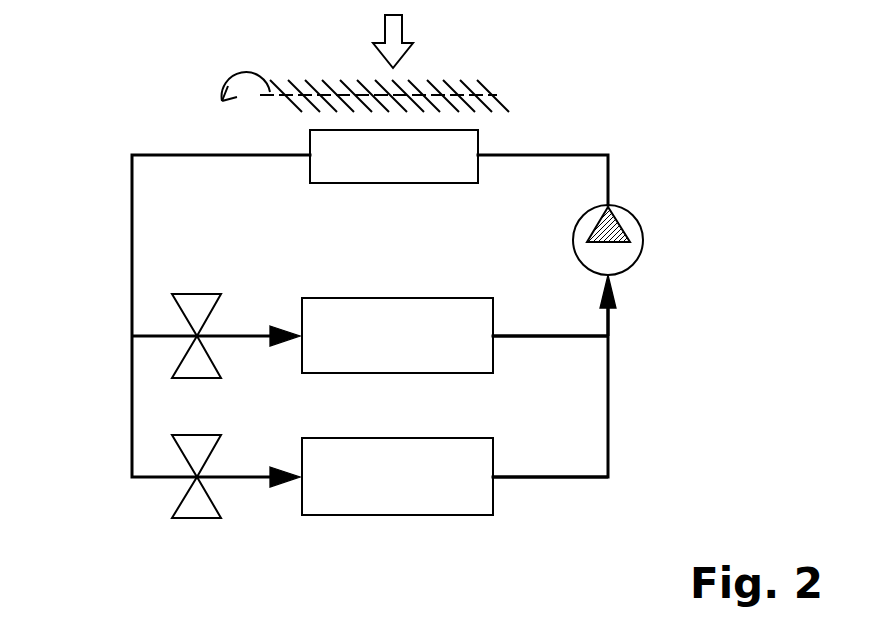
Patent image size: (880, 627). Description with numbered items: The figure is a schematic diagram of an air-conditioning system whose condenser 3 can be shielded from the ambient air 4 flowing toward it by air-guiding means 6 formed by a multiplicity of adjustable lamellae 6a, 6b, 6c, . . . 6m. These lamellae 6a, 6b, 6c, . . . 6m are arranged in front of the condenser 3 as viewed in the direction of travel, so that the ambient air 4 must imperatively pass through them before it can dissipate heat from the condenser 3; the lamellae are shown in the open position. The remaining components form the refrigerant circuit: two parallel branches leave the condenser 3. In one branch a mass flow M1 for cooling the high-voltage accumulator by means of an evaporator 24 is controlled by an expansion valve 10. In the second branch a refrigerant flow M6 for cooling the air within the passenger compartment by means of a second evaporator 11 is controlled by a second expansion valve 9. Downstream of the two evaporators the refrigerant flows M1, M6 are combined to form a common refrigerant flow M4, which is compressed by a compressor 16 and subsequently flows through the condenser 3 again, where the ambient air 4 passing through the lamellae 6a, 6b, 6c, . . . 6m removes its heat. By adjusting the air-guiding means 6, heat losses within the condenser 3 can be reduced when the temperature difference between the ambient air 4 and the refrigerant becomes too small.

The condenser 3 is at (430, 183).
The ambient air 4 is at (403, 24).
The air-guiding means 6 is at (490, 97).
The lamella 6a is at (278, 82).
The lamella 6b is at (295, 82).
The lamella 6c is at (310, 82).
The lamella 6m is at (470, 82).
The second expansion valve 9 is at (195, 294).
The expansion valve 10 is at (195, 435).
The second evaporator 11 is at (302, 315).
The compressor 16 is at (645, 190).
The evaporator 24 is at (441, 515).
The refrigerant flow M6 is at (548, 336).
The common refrigerant flow M4 is at (610, 326).
The mass flow M1 is at (548, 479).